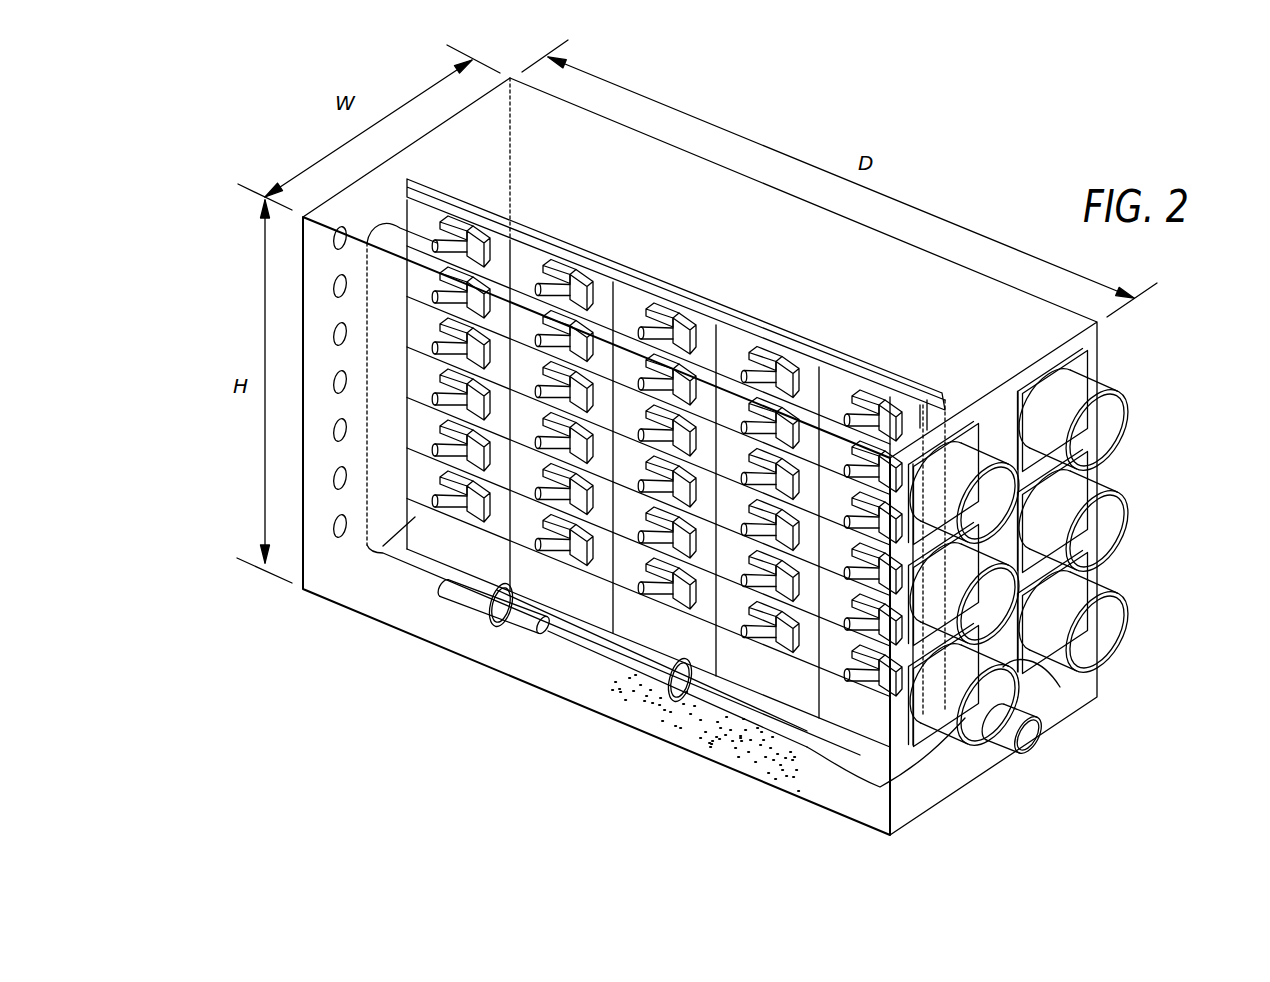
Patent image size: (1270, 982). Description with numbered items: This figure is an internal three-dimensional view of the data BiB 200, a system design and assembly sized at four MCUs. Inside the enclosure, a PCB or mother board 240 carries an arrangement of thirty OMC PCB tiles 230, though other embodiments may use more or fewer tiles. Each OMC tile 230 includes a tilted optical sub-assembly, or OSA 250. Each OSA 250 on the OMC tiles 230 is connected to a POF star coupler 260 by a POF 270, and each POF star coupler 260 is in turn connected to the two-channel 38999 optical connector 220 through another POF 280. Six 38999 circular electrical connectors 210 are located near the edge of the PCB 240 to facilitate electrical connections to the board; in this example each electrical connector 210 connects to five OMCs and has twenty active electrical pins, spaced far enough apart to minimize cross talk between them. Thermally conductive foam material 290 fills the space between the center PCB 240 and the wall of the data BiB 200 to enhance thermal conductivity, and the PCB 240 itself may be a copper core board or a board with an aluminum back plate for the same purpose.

The data BiB 200 is at (510, 714).
The 38999 circular electrical connector 210 is at (1137, 368).
The 2-channel 38999 optical connector 220 is at (1053, 718).
The OMC PCB tile 230 is at (483, 520).
The PCB (mother board) 240 is at (905, 383).
The tilted optical sub-assembly (OSA) 250 is at (556, 288).
The POF star coupler 260 is at (483, 627).
The POF 270 is at (380, 550).
The POF 280 is at (810, 735).
The thermally conductive foam material 290 is at (720, 737).